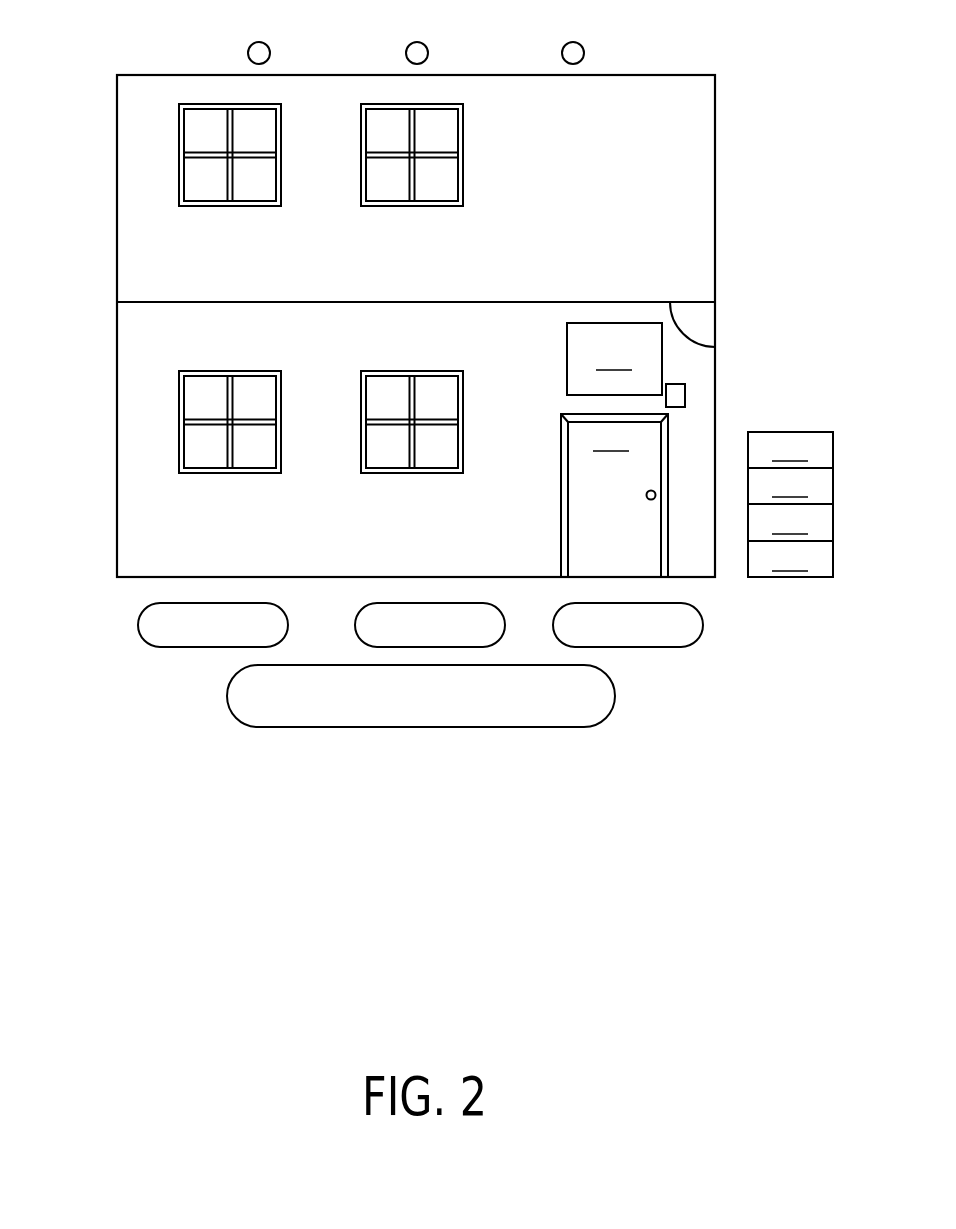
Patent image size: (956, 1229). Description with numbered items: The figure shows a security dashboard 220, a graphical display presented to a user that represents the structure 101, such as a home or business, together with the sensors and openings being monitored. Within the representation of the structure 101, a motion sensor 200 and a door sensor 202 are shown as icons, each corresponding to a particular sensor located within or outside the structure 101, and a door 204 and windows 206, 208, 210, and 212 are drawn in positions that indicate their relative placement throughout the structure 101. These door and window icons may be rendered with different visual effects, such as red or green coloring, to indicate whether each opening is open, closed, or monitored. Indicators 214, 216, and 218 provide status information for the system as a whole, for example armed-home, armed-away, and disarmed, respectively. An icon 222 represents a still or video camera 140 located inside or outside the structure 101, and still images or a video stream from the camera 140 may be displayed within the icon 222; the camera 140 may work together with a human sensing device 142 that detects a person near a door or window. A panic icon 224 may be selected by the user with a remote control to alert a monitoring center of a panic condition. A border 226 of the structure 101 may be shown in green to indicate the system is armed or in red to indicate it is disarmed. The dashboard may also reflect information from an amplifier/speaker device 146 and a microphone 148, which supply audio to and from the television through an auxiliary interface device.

The structure 101 is at (715, 173).
The motion sensor 200 is at (703, 323).
The door sensor 202 is at (685, 395).
The door 204 is at (614, 495).
The window 206 is at (378, 370).
The window 208 is at (197, 370).
The window 210 is at (179, 133).
The window 212 is at (463, 125).
The indicator 214 is at (267, 44).
The indicator 216 is at (425, 44).
The indicator 218 is at (581, 44).
The security dashboard 220 is at (226, 780).
The icon 222 is at (614, 359).
The panic icon 224 is at (510, 727).
The border 226 is at (110, 558).
The still or video camera 140 is at (790, 450).
The human sensing device 142 is at (790, 486).
The amplifier/speaker device 146 is at (790, 522).
The microphone 148 is at (790, 559).